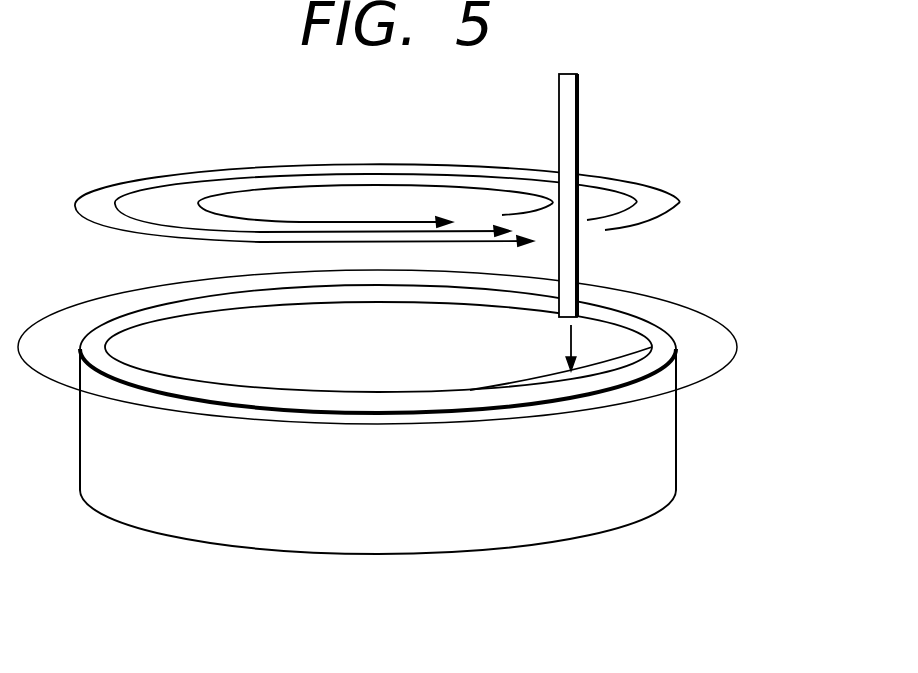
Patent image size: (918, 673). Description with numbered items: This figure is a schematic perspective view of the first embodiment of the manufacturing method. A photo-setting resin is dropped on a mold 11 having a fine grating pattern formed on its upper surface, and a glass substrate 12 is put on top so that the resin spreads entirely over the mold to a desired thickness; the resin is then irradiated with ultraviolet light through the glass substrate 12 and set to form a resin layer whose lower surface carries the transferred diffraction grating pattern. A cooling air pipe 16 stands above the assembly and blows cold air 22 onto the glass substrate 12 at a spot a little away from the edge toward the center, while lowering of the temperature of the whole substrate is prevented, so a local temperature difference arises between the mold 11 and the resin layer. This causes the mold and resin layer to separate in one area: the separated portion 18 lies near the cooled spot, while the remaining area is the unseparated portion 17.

The mold 11 is at (668, 475).
The glass substrate 12 is at (673, 298).
The cooling air pipe 16 is at (579, 121).
The unseparated portion 17 is at (310, 363).
The separated portion 18 is at (613, 365).
The cold air 22 is at (573, 337).